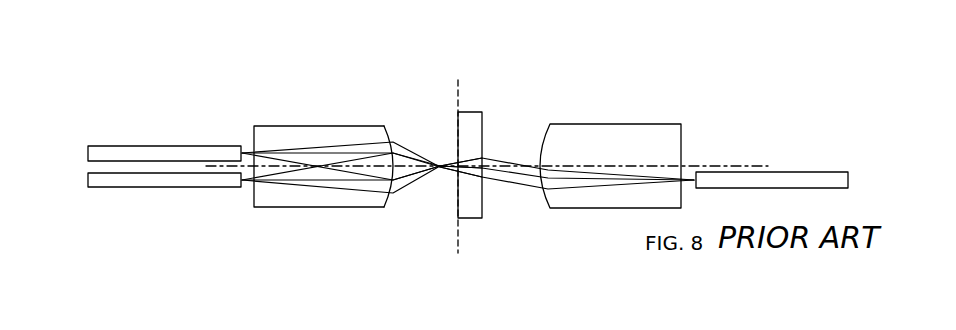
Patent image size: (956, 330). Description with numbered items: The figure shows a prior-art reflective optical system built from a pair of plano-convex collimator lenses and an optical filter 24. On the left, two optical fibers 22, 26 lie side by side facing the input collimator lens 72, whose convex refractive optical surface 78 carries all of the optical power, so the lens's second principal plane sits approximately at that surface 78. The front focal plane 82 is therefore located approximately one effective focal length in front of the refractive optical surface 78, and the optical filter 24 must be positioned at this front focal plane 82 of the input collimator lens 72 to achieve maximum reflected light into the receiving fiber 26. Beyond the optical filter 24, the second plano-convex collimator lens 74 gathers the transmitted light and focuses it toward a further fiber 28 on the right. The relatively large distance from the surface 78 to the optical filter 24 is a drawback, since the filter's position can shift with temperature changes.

The first optical fiber 22 is at (146, 147).
The receiving fiber 26 is at (140, 190).
The input collimator lens 72 is at (295, 132).
The refractive optical surface 78 is at (388, 133).
The front focal plane 82 is at (460, 233).
The optical filter 24 is at (478, 122).
The plano-convex collimator lens 74 is at (587, 132).
The third optical fiber 28 is at (793, 167).